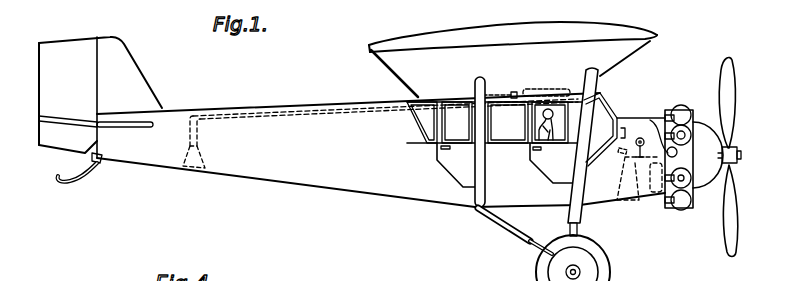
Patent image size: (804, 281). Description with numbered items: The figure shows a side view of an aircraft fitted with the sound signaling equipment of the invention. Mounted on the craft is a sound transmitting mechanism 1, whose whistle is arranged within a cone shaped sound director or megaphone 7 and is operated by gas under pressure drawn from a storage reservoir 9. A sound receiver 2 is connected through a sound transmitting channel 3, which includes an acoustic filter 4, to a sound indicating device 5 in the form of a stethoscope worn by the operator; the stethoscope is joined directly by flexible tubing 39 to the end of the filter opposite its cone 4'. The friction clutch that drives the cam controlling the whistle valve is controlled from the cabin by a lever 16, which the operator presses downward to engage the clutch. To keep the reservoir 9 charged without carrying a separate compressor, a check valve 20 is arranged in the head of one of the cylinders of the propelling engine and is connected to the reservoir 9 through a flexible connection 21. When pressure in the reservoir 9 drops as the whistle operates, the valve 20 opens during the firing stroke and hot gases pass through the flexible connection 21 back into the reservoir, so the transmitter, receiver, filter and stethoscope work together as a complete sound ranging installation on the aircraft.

The sound transmitting mechanism 1 is at (640, 160).
The sound receiver 2 is at (205, 152).
The sound transmitting channel 3 is at (337, 101).
The acoustic filter 4 is at (546, 79).
The cone 4' is at (496, 77).
The sound indicating device 5 is at (532, 127).
The megaphone 7 is at (613, 193).
The storage reservoir 9 is at (658, 193).
The lever 16 is at (622, 152).
The check valve 20 is at (695, 138).
The flexible connection 21 is at (658, 131).
The flexible tubing 39 is at (568, 107).